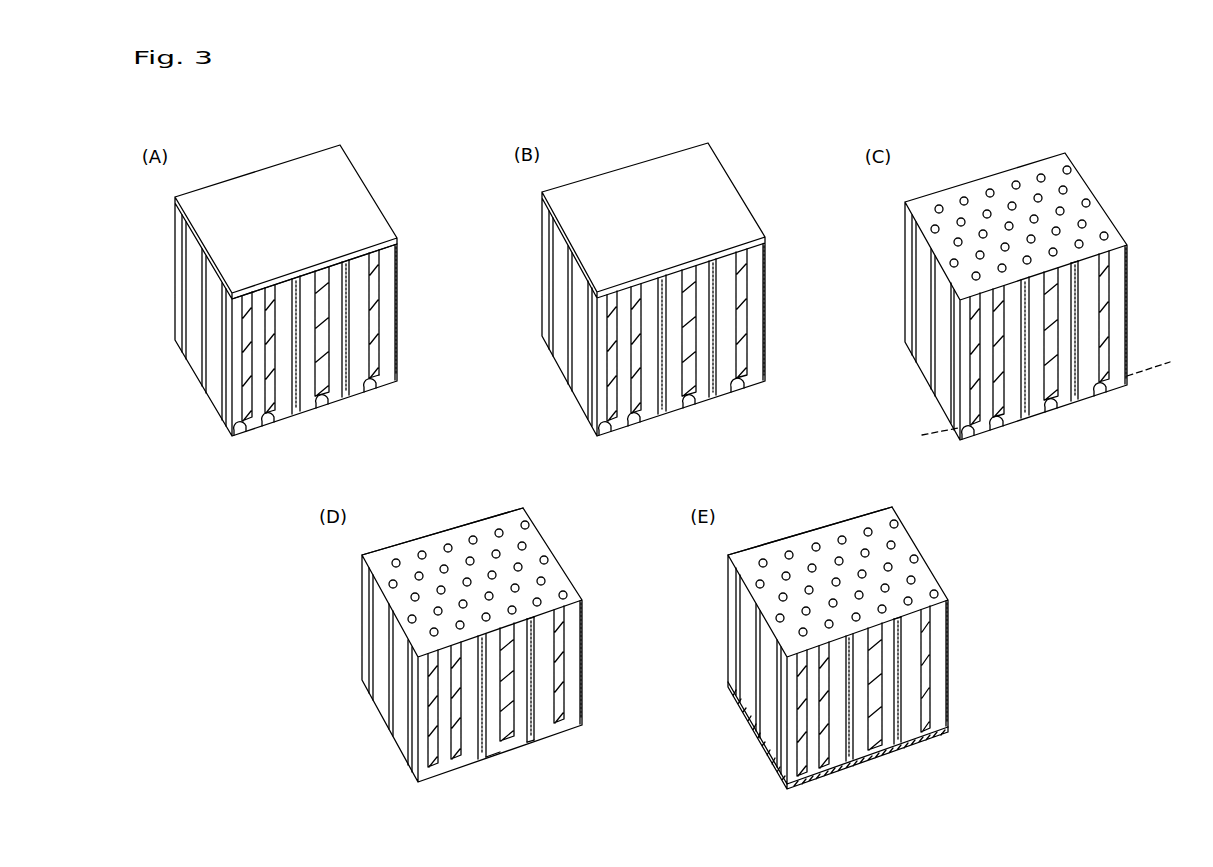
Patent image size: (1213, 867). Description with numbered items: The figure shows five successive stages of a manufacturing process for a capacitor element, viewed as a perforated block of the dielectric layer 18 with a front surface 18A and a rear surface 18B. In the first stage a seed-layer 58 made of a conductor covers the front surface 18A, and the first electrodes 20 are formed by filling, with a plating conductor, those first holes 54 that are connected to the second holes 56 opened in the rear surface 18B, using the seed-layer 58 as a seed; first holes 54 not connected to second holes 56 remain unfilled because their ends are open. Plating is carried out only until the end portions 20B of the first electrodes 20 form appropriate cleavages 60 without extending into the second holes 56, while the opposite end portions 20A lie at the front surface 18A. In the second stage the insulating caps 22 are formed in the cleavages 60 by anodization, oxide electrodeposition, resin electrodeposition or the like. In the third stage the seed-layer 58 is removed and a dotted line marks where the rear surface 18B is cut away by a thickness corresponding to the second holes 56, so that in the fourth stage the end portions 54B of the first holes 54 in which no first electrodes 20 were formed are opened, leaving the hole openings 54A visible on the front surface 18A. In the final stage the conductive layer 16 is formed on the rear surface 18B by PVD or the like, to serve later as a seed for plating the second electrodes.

In FIG. 3E, the conductive layer 16 is at (935, 742).
In FIG. 3A, the dielectric layer 18 is at (175, 287).
In FIG. 3B, the dielectric layer 18 is at (542, 288).
In FIG. 3C, the dielectric layer 18 is at (905, 285).
In FIG. 3D, the dielectric layer 18 is at (362, 642).
In FIG. 3E, the dielectric layer 18 is at (728, 642).
In FIG. 3D, the front surface of the dielectric layer 18A is at (490, 522).
In FIG. 3E, the front surface of the dielectric layer 18A is at (860, 522).
In FIG. 3D, the rear surface of the dielectric layer 18B is at (492, 760).
In FIG. 3A, the first electrode 20 is at (372, 311).
In FIG. 3A, the one end portion of the first electrode 20A is at (389, 253).
In FIG. 3C, the one end portion of the first electrode 20A is at (988, 193).
In FIG. 3D, the one end portion of the first electrode 20A is at (445, 547).
In FIG. 3E, the one end portion of the first electrode 20A is at (813, 547).
In FIG. 3A, the other end portion of the first electrode 20B is at (375, 393).
In FIG. 3B, the insulating cap 22 is at (757, 383).
In FIG. 3C, the insulating cap 22 is at (1065, 397).
In FIG. 3D, the insulating cap 22 is at (568, 730).
In FIG. 3E, the insulating cap 22 is at (837, 768).
In FIG. 3C, the first hole 54 is at (1077, 322).
In FIG. 3D, the first hole 54 is at (532, 677).
In FIG. 3E, the first hole 54 is at (897, 678).
In FIG. 3C, the upper end of partition wall 54A is at (1077, 258).
In FIG. 3D, the upper end of partition wall 54A is at (527, 615).
In FIG. 3E, the upper end of partition wall 54A is at (895, 615).
In FIG. 3D, the end portion of the first hole 54B is at (532, 742).
In FIG. 3A, the second hole 56 is at (245, 432).
In FIG. 3B, the second hole 56 is at (737, 395).
In FIG. 3C, the second hole 56 is at (1098, 395).
In FIG. 3A, the seed-layer 58 is at (292, 172).
In FIG. 3B, the seed-layer 58 is at (663, 172).
In FIG. 3A, the cleavage 60 is at (333, 398).